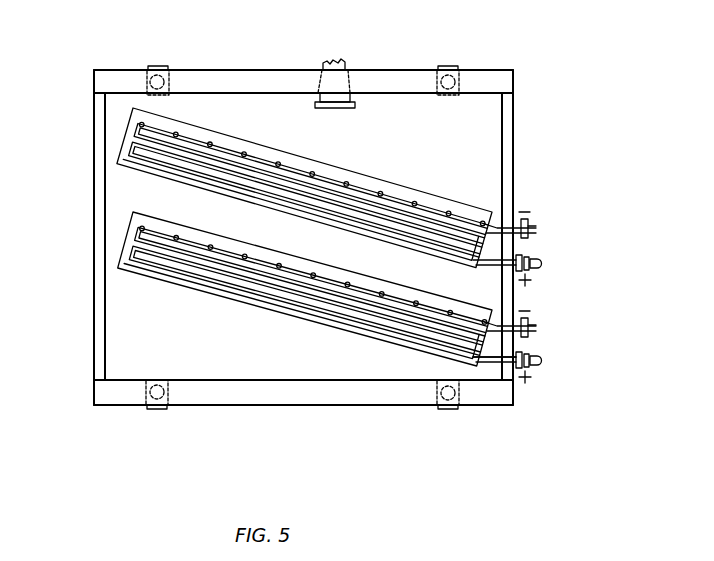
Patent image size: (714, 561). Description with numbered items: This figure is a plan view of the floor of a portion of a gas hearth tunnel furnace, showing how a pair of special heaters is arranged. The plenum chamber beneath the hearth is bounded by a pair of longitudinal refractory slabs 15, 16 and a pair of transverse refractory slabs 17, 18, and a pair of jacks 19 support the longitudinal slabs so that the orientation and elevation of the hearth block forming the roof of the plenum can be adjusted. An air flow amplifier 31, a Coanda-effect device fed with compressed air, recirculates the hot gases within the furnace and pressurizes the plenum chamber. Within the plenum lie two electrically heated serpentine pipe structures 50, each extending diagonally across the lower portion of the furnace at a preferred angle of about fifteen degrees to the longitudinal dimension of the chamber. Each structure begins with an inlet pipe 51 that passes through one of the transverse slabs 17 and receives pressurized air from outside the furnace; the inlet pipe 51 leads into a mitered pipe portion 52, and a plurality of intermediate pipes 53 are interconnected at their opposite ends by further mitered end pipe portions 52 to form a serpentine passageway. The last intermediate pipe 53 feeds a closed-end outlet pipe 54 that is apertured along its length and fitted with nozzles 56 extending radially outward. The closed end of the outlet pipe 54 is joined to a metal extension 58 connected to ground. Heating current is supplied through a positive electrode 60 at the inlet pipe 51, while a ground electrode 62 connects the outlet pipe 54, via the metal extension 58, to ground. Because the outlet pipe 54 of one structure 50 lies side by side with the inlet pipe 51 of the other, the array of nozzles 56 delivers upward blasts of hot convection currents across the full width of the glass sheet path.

The longitudinal refractory slab 15 is at (272, 406).
The longitudinal refractory slab 16 is at (274, 70).
The transverse refractory slab 17 is at (514, 120).
The transverse refractory slab 18 is at (94, 112).
The jack 19 is at (158, 66).
The air flow amplifier 31 is at (355, 109).
The serpentine pipe structure 50 is at (333, 163).
The inlet pipe 51 is at (496, 362).
The mitered end pipe portion 52 is at (483, 246).
The intermediate pipe 53 is at (183, 159).
The apertured outlet pipe 54 is at (232, 148).
The nozzle 56 is at (413, 203).
The metal extension 58 is at (530, 228).
The positive electrode 60 is at (541, 263).
The ground electrode 62 is at (530, 223).